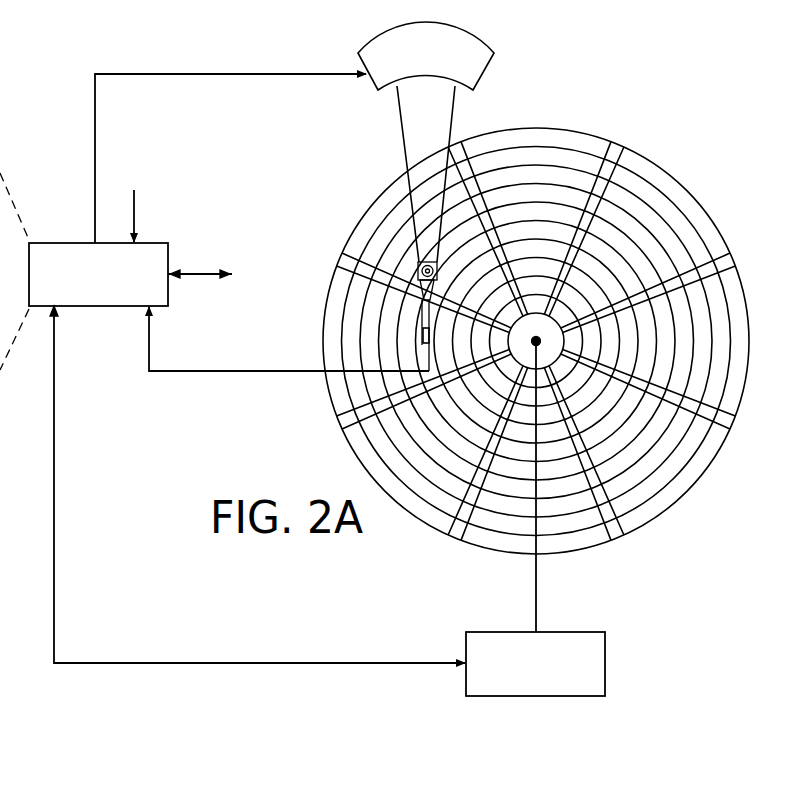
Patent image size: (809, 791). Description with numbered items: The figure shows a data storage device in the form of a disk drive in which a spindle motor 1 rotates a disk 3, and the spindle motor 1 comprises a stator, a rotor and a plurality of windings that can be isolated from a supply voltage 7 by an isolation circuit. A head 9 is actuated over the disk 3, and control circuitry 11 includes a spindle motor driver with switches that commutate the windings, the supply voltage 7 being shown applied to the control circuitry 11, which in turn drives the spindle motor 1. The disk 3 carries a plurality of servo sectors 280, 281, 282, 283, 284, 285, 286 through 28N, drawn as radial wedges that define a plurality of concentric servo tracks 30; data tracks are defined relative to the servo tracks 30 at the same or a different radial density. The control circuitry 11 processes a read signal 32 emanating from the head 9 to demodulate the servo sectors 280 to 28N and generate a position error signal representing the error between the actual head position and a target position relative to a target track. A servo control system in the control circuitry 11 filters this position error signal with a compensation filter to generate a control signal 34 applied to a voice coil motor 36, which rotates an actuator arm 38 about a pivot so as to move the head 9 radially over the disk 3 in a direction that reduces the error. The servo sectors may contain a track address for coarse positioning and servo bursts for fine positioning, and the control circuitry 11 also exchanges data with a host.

The spindle motor 1 is at (606, 664).
The disk 3 is at (683, 177).
The supply voltage 7 is at (136, 209).
The head 9 is at (419, 337).
The control circuitry 11 is at (100, 306).
The servo sector 280 is at (615, 150).
The servo sector 281 is at (722, 263).
The servo sector 282 is at (724, 429).
The servo sector 283 is at (602, 540).
The servo sector 284 is at (455, 530).
The servo sector 285 is at (342, 422).
The servo sector 286 is at (350, 253).
The servo sector 28N is at (462, 152).
The servo tracks 30 is at (517, 158).
The read signal 32 is at (222, 371).
The control signal 34 is at (95, 112).
The voice coil motor (VCM) 36 is at (376, 88).
The actuator arm 38 is at (405, 150).